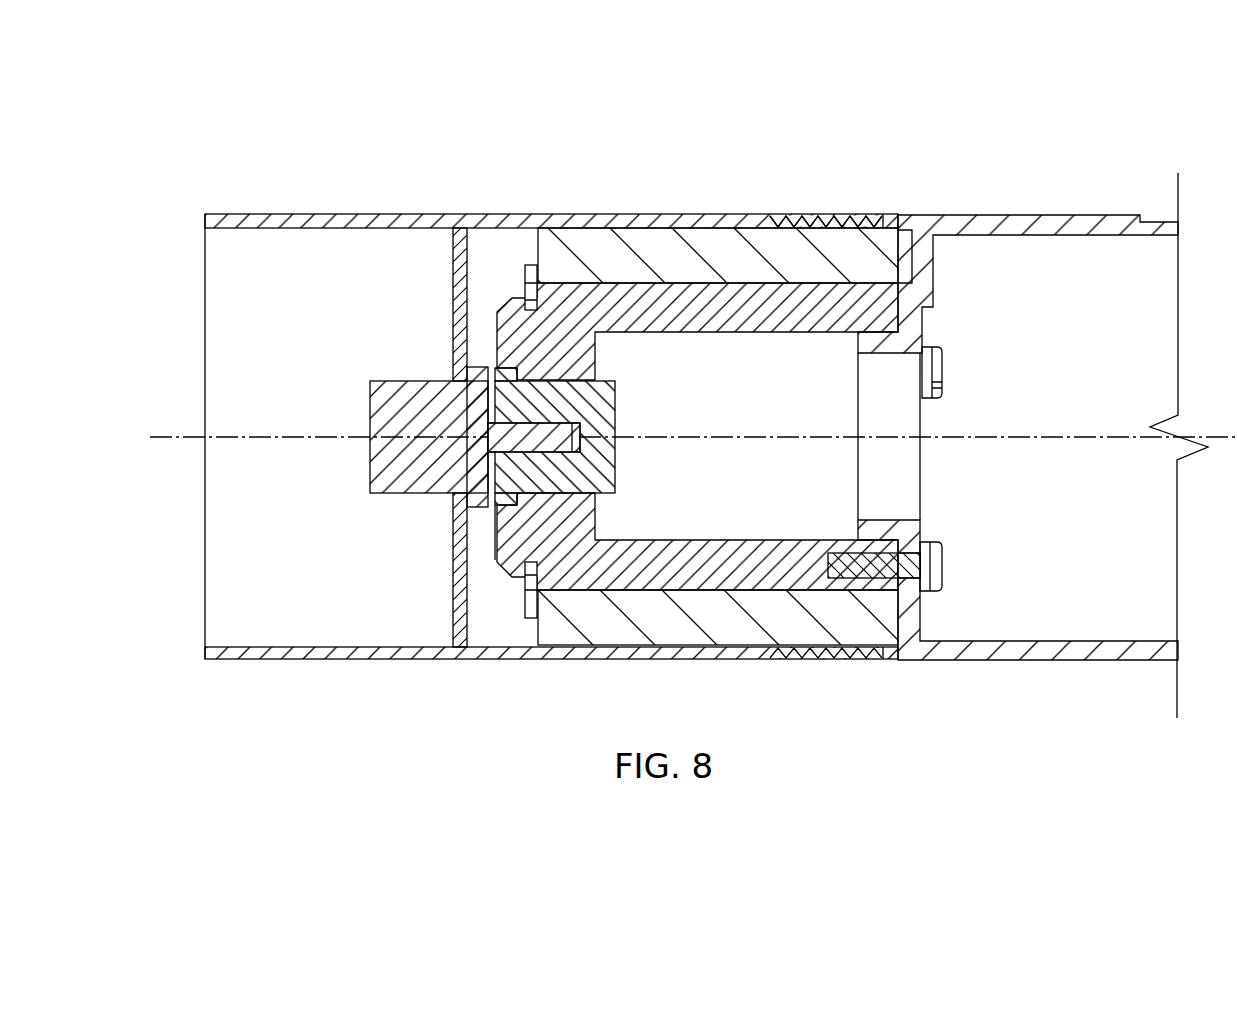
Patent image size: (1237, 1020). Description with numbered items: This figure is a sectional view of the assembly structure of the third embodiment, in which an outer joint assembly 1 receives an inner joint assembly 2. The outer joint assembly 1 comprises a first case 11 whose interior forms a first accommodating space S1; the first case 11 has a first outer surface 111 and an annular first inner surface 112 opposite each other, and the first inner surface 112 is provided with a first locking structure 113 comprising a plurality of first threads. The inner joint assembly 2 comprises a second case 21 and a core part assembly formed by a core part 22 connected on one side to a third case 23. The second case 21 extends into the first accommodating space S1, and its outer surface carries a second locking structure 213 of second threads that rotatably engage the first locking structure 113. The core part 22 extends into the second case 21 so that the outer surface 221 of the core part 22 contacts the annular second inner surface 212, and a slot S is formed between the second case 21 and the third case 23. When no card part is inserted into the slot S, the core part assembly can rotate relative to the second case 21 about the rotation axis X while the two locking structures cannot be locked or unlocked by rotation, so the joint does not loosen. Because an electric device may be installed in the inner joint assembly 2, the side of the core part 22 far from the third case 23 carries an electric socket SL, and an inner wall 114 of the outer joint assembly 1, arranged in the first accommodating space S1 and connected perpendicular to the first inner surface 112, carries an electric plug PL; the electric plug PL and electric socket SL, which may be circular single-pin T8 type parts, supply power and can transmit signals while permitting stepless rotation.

The outer joint assembly 1 is at (551, 393).
The first case 11 is at (680, 218).
The first outer surface 111 is at (453, 222).
The first inner surface 112 is at (318, 228).
The inner wall 114 is at (453, 608).
The first locking structure 113 is at (899, 186).
The inner joint assembly 2 is at (1029, 425).
The second case 21 is at (590, 248).
The core part 22 is at (737, 565).
The third case 23 is at (1100, 215).
The second inner surface 212 is at (754, 234).
The outer surface of the core part 221 is at (740, 285).
The second locking structure 213 is at (838, 218).
The slot S is at (912, 224).
The first accommodating space S1 is at (487, 617).
The electric socket SL is at (612, 410).
The electric plug PL is at (372, 472).
The rotation axis X is at (1050, 437).